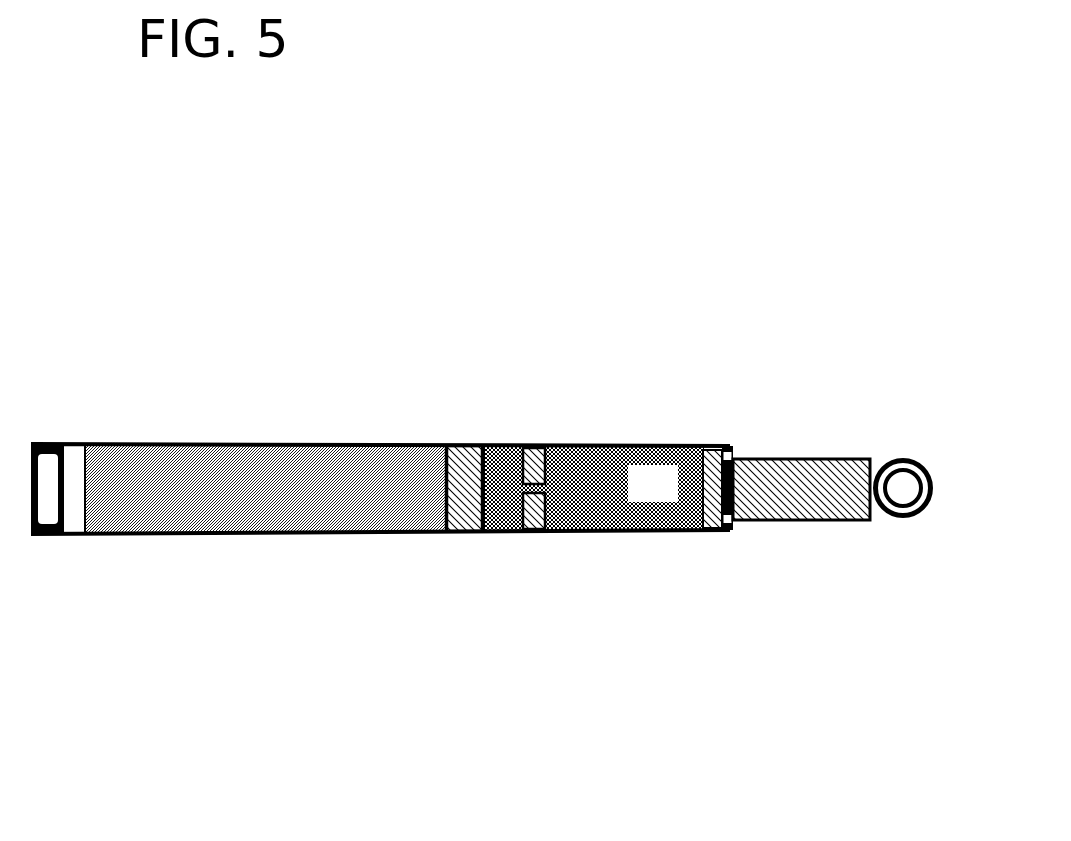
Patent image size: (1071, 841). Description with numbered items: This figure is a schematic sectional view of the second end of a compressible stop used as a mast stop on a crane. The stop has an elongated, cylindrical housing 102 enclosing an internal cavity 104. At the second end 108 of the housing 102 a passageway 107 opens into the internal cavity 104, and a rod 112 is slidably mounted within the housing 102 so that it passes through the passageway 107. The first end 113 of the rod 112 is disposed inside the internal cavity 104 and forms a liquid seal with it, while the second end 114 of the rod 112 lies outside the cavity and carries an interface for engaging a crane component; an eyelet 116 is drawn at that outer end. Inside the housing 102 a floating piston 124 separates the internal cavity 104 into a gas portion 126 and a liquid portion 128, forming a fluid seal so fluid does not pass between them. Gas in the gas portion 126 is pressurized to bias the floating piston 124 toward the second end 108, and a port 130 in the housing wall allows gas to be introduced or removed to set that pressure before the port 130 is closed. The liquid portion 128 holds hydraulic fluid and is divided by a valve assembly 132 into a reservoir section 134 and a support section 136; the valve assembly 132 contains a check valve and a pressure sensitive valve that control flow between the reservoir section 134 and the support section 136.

The elongated housing 102 is at (326, 445).
The internal cavity 104 is at (388, 447).
The passageway 107 is at (738, 450).
The second end 108 is at (857, 443).
The rod 112 is at (824, 522).
The first end of the rod 113 is at (718, 532).
The second end of the rod 114 is at (877, 540).
The eyelet 116 is at (913, 460).
The floating piston 124 is at (462, 446).
The gas portion 126 is at (200, 492).
The liquid portion 128 is at (619, 445).
The port 130 is at (222, 444).
The valve assembly 132 is at (536, 446).
The reservoir section 134 is at (505, 532).
The support section 136 is at (653, 483).